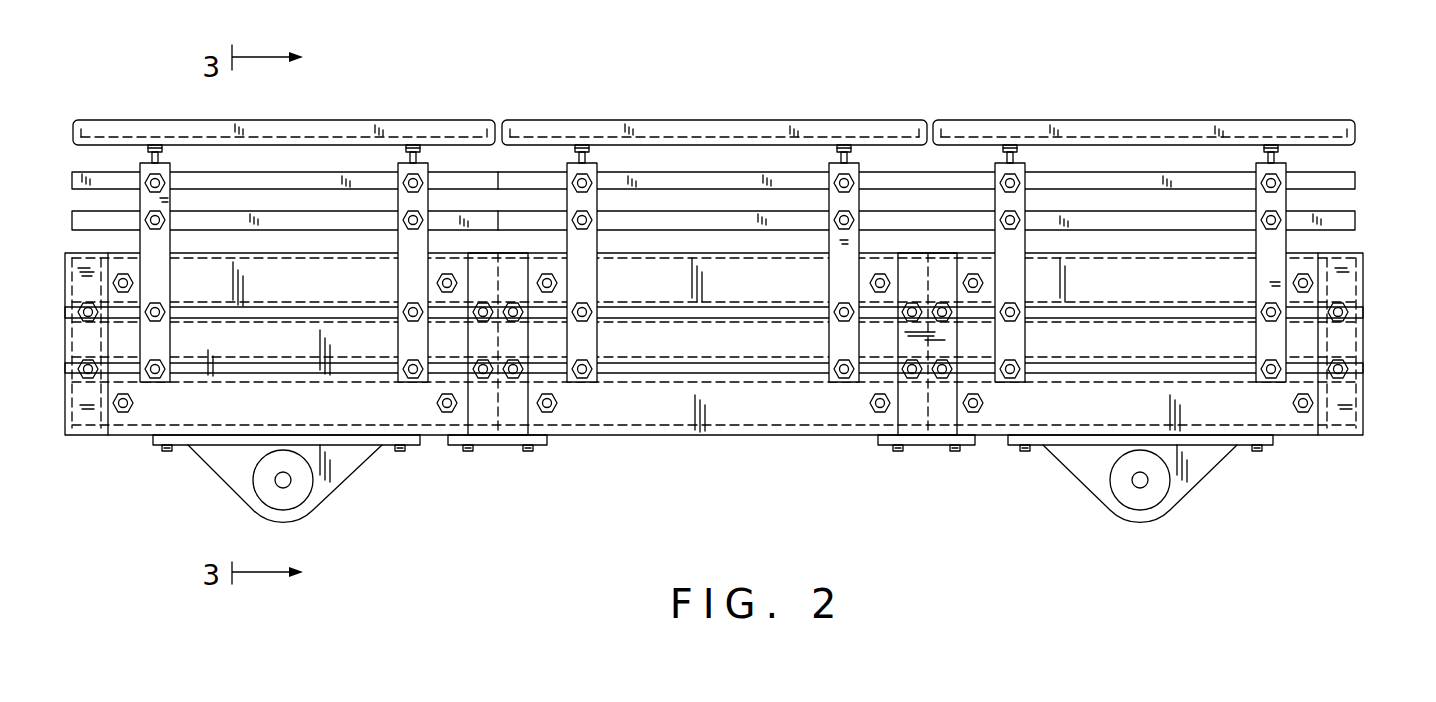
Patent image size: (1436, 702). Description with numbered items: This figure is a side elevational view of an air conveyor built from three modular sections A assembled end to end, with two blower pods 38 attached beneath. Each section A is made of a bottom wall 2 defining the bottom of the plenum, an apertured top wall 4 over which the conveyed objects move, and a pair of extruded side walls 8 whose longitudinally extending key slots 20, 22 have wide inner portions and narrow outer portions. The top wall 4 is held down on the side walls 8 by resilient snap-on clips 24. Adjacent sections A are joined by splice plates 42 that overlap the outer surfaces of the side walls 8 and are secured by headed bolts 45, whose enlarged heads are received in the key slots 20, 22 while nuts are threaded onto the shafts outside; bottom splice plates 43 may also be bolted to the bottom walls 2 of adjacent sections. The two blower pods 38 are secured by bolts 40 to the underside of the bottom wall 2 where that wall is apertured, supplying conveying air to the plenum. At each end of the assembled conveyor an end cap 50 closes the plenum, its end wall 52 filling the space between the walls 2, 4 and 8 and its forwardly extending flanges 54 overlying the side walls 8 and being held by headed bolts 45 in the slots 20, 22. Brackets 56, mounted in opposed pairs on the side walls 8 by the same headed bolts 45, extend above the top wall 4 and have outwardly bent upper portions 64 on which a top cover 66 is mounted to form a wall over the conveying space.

The bottom wall 2 is at (762, 432).
The top wall 4 is at (305, 258).
The side walls 8 is at (268, 352).
The key slot 20 is at (313, 312).
The key slot 22 is at (308, 373).
The snap-on clips 24 is at (130, 253).
The blower pods 38 is at (333, 468).
The bolts 40 is at (167, 452).
The splice plates 42 is at (512, 410).
The bottom splice plates 43 is at (545, 442).
The bolts 45 is at (78, 320).
The end caps 50 is at (60, 275).
The end wall 52 is at (65, 392).
The flanges 54 is at (85, 412).
The brackets 56 is at (150, 385).
The outwardly bent upper portions 64 is at (170, 163).
The top cover 66 is at (328, 128).
The modular section A is at (400, 118).